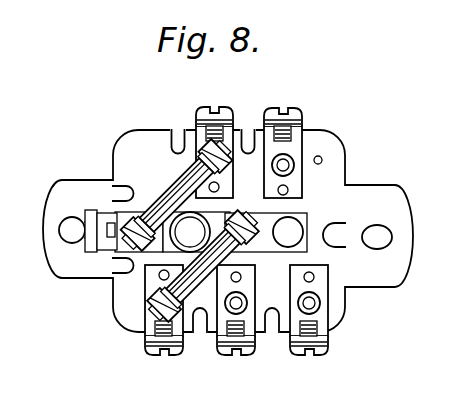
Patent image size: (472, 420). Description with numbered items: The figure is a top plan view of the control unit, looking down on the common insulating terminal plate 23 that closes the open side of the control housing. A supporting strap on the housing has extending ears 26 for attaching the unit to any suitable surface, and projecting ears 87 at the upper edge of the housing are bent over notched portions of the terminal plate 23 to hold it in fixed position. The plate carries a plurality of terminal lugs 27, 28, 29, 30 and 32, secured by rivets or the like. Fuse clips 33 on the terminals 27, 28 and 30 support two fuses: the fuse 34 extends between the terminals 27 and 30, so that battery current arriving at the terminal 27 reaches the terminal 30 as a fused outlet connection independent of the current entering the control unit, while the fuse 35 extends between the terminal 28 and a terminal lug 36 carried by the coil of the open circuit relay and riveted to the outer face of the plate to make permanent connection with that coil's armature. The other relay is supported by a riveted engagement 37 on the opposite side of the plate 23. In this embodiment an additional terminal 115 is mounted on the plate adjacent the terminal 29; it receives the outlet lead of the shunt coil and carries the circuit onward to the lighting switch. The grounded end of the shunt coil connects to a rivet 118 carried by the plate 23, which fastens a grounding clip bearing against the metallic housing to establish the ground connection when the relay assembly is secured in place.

The insulating terminal plate 23 is at (347, 156).
The extending ears 26 is at (395, 186).
The terminal lug 27 is at (113, 213).
The terminal lug 28 is at (148, 328).
The terminal lug 29 is at (222, 327).
The terminal lug 30 is at (203, 130).
The terminal lug 32 is at (295, 138).
The fuse clips 33 is at (139, 208).
The fuse 34 is at (183, 172).
The fuse 35 is at (203, 266).
The terminal lug 36 is at (290, 214).
The riveted engagement 37 is at (211, 230).
The projecting ears 87 is at (178, 142).
The additional terminal 115 is at (324, 321).
The rivet 118 is at (322, 158).